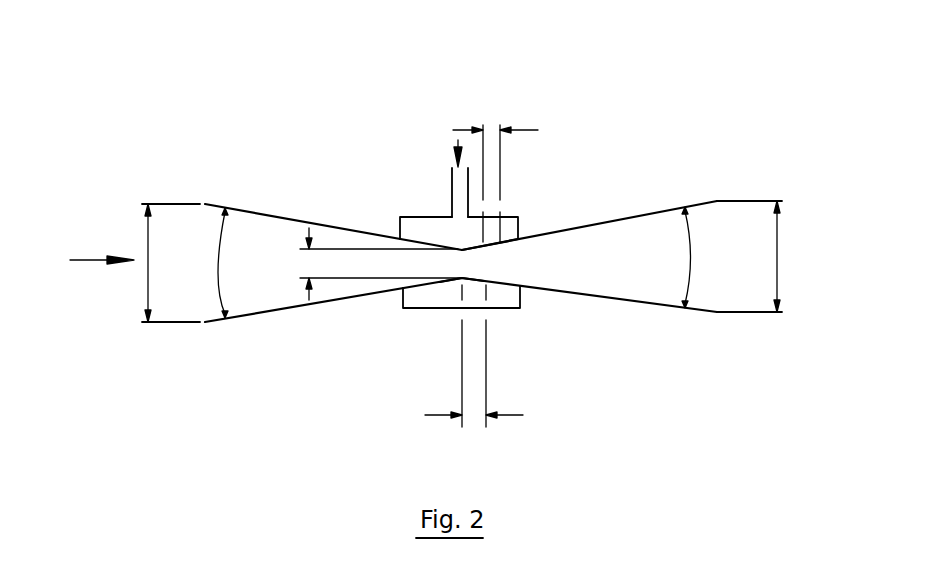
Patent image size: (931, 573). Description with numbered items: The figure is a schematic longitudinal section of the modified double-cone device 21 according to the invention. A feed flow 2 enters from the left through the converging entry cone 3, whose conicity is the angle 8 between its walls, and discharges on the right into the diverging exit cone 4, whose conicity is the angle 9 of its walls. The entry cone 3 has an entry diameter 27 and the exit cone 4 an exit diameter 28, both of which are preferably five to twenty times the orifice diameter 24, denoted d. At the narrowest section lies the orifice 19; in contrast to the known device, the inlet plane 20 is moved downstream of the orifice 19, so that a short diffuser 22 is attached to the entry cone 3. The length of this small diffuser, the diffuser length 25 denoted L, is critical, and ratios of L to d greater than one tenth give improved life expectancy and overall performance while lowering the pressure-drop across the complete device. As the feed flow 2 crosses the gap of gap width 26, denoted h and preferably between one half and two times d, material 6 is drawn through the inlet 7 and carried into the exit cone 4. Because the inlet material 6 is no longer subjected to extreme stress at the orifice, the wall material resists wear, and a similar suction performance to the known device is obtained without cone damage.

The feed flow 2 is at (82, 232).
The entry cone 3 is at (308, 304).
The exit cone 4 is at (647, 304).
The material 6 is at (457, 141).
The inlet 7 is at (452, 195).
The angle between the walls of the entry cone 8 is at (218, 280).
The angle of the walls of the exit cone 9 is at (690, 262).
The orifice 19 is at (462, 279).
The inlet plane 20 is at (462, 348).
The double-cone device 21 is at (227, 113).
The short diffuser 22 is at (482, 280).
The orifice diameter 24 is at (305, 263).
The small diffuser length 25 is at (523, 415).
The gap width 26 is at (538, 130).
The entry diameter 27 is at (147, 227).
The exit diameter 28 is at (777, 218).